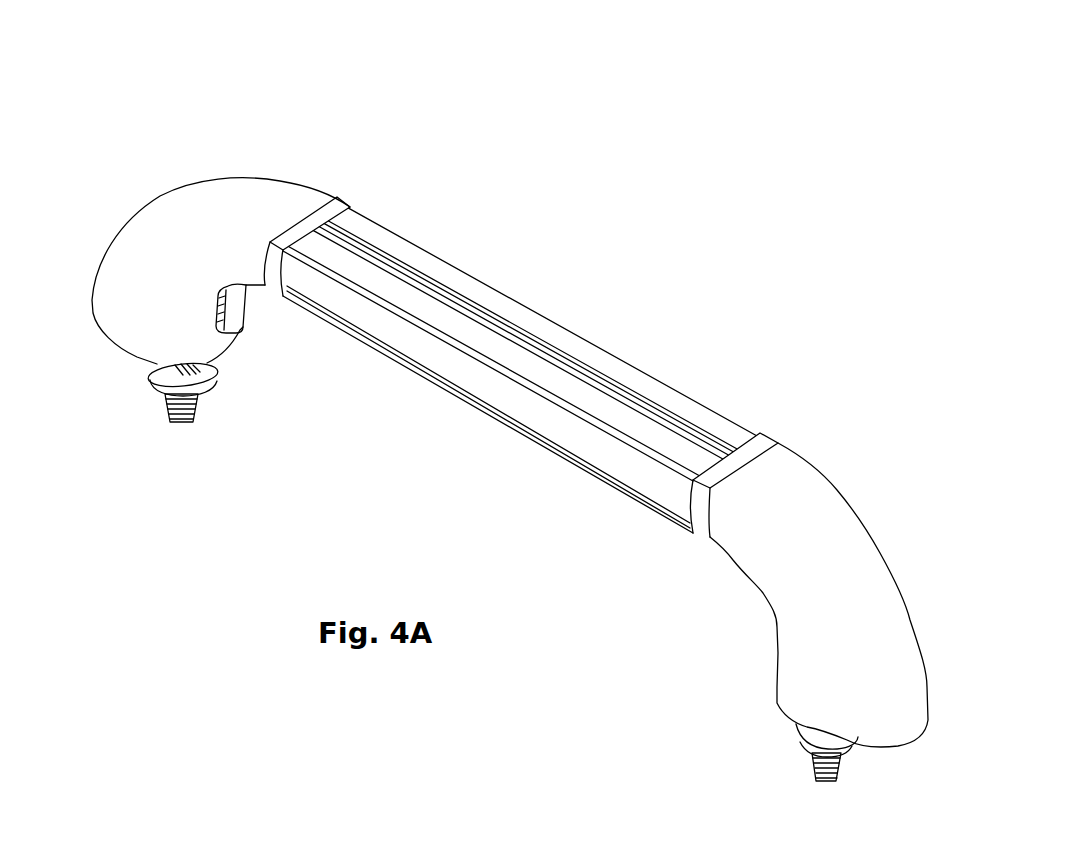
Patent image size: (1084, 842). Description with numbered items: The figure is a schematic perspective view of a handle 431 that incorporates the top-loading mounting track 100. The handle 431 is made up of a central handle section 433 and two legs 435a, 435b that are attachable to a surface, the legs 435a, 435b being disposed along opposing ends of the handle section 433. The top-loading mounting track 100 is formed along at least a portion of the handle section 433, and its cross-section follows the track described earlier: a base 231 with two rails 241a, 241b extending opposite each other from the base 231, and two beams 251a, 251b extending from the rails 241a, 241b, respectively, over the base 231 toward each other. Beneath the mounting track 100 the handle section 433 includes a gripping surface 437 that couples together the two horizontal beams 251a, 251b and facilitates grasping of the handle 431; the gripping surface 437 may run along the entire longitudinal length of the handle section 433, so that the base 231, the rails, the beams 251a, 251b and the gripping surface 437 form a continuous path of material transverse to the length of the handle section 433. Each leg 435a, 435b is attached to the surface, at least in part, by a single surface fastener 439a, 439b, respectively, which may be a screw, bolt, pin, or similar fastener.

The top-loading mounting track 100 is at (519, 345).
The base 231 is at (380, 273).
The rail 241a is at (507, 338).
The rail 241b is at (483, 313).
The beam 251a is at (682, 403).
The beam 251b is at (632, 433).
The handle 431 is at (509, 455).
The handle section 433 is at (488, 392).
The leg 435a is at (905, 520).
The leg 435b is at (120, 194).
The gripping surface 437 is at (558, 425).
The surface fastener 439a is at (811, 759).
The surface fastener 439b is at (165, 396).